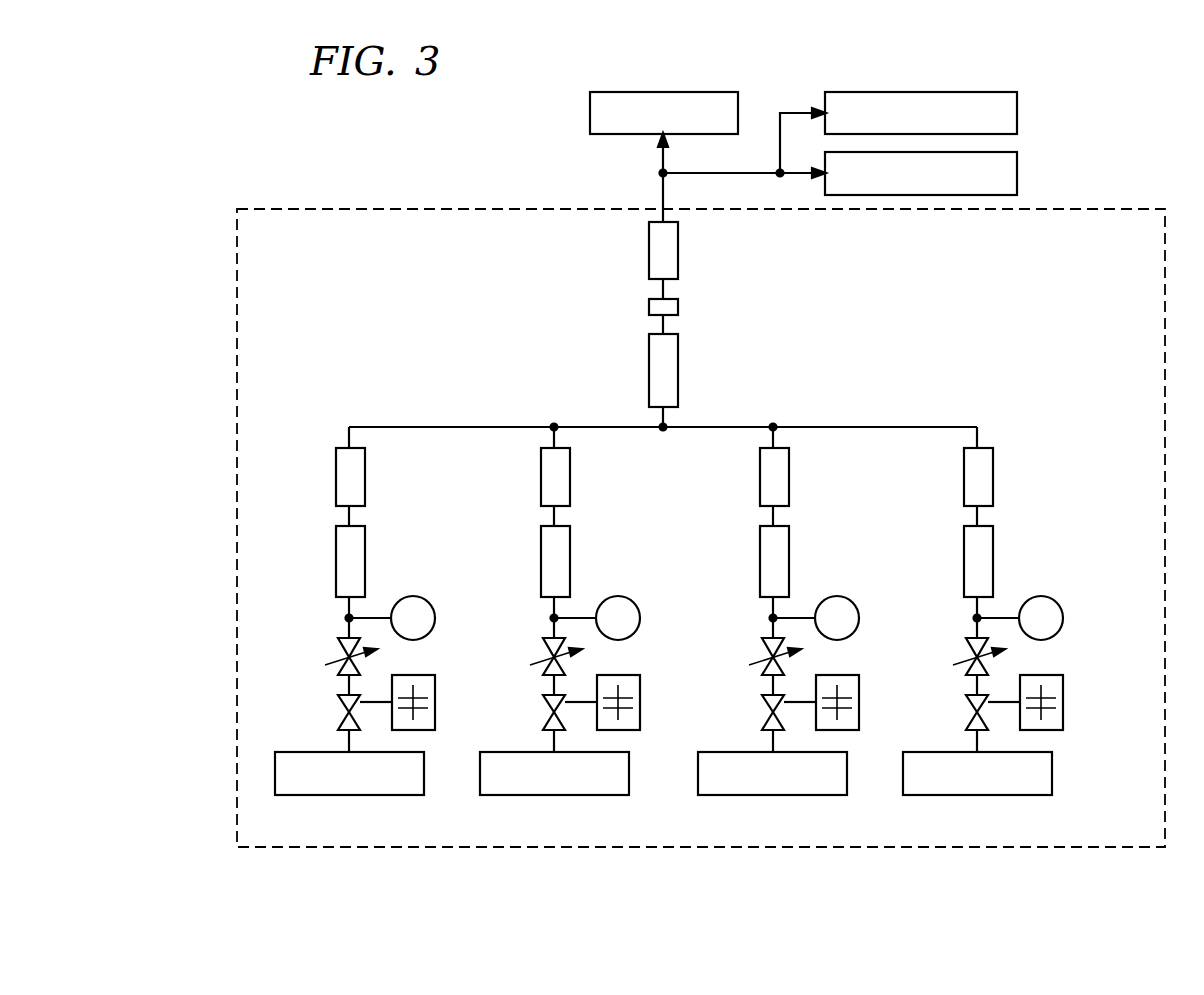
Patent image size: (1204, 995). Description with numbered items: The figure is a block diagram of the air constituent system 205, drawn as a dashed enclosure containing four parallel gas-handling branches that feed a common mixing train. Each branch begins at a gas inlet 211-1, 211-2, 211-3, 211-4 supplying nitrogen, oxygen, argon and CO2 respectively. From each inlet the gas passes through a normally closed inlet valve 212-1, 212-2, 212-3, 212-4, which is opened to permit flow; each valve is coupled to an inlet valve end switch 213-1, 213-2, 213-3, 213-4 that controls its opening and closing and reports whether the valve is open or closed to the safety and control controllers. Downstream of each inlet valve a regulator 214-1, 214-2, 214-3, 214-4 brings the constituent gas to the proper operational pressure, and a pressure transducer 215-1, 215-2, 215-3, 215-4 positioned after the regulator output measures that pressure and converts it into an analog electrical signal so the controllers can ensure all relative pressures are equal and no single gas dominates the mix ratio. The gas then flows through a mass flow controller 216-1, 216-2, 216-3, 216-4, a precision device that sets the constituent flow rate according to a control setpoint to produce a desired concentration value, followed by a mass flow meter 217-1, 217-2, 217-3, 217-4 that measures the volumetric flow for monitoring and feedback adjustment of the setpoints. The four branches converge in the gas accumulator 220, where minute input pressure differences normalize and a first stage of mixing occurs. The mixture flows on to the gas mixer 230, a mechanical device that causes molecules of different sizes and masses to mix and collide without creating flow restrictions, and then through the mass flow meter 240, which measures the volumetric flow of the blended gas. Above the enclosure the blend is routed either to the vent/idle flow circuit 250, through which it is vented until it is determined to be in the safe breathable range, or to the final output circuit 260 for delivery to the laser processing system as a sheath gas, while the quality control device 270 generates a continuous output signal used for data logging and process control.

The air constituent system 205 is at (236, 224).
The final output circuit 260 is at (590, 114).
The quality control device 270 is at (1017, 114).
The vent/idle flow circuit 250 is at (1017, 174).
The mass flow meter 240 is at (679, 255).
The gas mixer 230 is at (679, 309).
The gas accumulator 220 is at (679, 375).
The mass flow meter 217-1 is at (336, 477).
The mass flow meter 217-2 is at (541, 477).
The mass flow meter 217-3 is at (760, 477).
The mass flow meter 217-4 is at (964, 477).
The mass flow controller 216-1 is at (336, 563).
The mass flow controller 216-2 is at (541, 563).
The mass flow controller 216-3 is at (760, 563).
The mass flow controller 216-4 is at (964, 563).
The pressure transducer 215-1 is at (436, 619).
The pressure transducer 215-2 is at (641, 619).
The pressure transducer 215-3 is at (860, 619).
The pressure transducer 215-4 is at (1064, 619).
The regulator 214-1 is at (336, 653).
The regulator 214-2 is at (541, 653).
The regulator 214-3 is at (760, 653).
The regulator 214-4 is at (963, 653).
The inlet valve end switch 213-1 is at (436, 703).
The inlet valve end switch 213-2 is at (641, 703).
The inlet valve end switch 213-3 is at (860, 703).
The inlet valve end switch 213-4 is at (1064, 703).
The inlet valve 212-1 is at (335, 718).
The inlet valve 212-2 is at (540, 718).
The inlet valve 212-3 is at (759, 718).
The inlet valve 212-4 is at (962, 718).
The gas inlet 211-1 is at (351, 795).
The gas inlet 211-2 is at (556, 795).
The gas inlet 211-3 is at (774, 795).
The gas inlet 211-4 is at (975, 795).